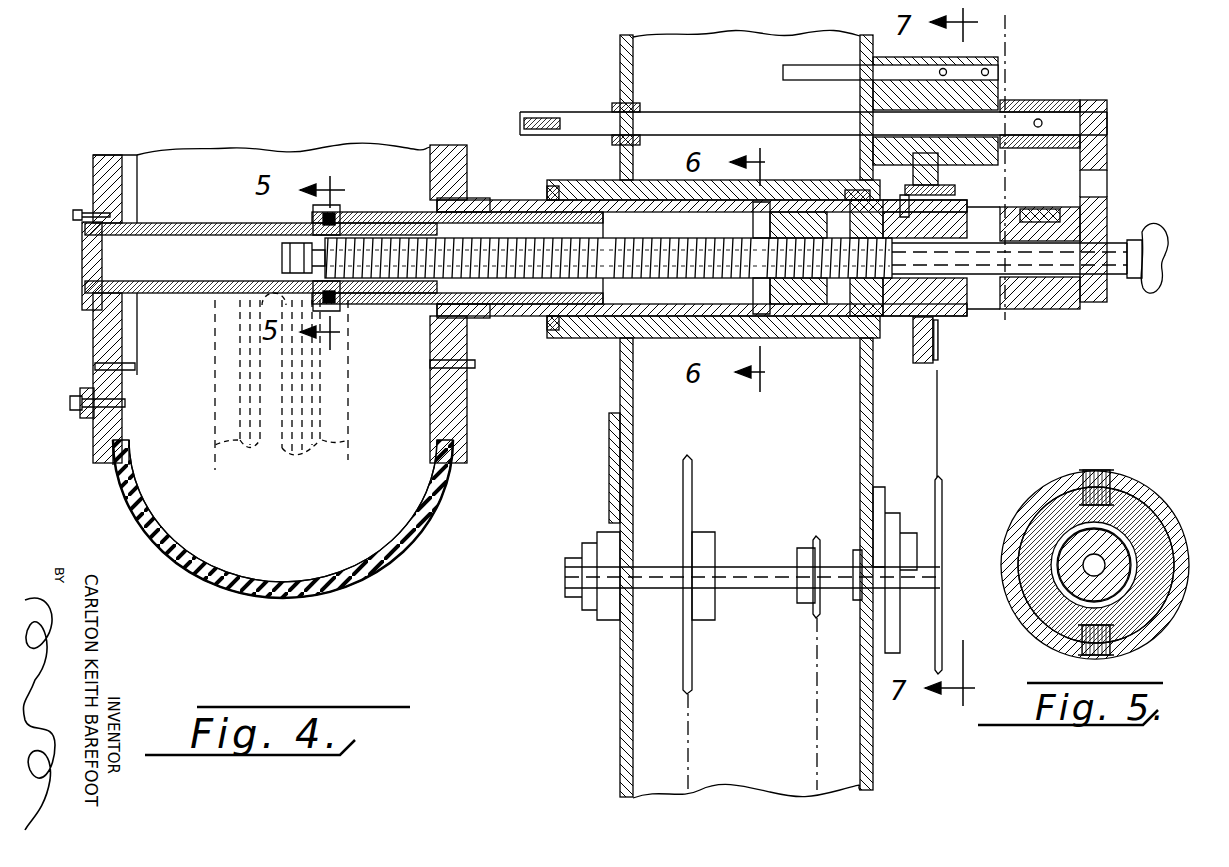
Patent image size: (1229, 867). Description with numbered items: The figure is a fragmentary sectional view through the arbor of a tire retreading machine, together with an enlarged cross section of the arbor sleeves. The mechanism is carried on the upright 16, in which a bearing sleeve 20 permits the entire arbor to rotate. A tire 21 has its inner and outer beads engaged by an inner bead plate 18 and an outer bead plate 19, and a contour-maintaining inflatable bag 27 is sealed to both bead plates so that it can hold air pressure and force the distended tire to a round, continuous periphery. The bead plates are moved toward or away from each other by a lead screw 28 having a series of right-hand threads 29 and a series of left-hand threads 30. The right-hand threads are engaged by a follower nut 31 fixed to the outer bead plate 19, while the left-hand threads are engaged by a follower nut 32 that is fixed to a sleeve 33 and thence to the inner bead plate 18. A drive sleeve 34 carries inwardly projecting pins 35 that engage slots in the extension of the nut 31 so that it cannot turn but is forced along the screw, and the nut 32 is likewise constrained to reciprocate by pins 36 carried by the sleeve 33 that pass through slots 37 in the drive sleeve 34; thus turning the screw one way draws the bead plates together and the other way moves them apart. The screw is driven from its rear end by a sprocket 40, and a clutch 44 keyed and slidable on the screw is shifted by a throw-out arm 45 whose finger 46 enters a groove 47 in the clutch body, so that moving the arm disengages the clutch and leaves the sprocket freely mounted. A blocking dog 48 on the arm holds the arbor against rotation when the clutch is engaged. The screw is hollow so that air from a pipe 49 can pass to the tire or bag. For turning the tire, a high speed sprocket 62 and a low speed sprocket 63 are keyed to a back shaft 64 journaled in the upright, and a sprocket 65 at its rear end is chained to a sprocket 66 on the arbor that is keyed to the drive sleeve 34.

In FIG. 4, the upright 16 is at (620, 58).
In FIG. 4, the inner bead plate 18 is at (480, 390).
In FIG. 4, the outer bead plate 19 is at (95, 346).
In FIG. 4, the bearing sleeve 20 is at (660, 180).
In FIG. 4, the tire 21 is at (403, 547).
In FIG. 4, the inflatable bag 27 is at (197, 547).
In FIG. 4, the lead screw 28 is at (608, 279).
In FIG. 5, the lead screw 28 is at (1127, 598).
In FIG. 4, the right-hand threads 29 is at (507, 283).
In FIG. 4, the left-hand threads 30 is at (820, 306).
In FIG. 4, the follower nut 31 is at (490, 212).
In FIG. 5, the follower nut 31 is at (1033, 603).
In FIG. 4, the follower nut 32 is at (800, 212).
In FIG. 4, the sleeve 33 is at (680, 338).
In FIG. 4, the drive sleeve 34 is at (377, 200).
In FIG. 5, the drive sleeve 34 is at (1057, 484).
In FIG. 4, the pins 35 is at (343, 304).
In FIG. 5, the pins 35 is at (1108, 482).
In FIG. 4, the pins 36 is at (780, 314).
In FIG. 4, the slots 37 is at (650, 338).
In FIG. 4, the sprocket 40 is at (1007, 208).
In FIG. 4, the clutch 44 is at (1050, 317).
In FIG. 4, the throw-out arm 45 is at (578, 110).
In FIG. 4, the finger 46 is at (1108, 207).
In FIG. 4, the groove 47 is at (1093, 302).
In FIG. 4, the blocking dog 48 is at (973, 97).
In FIG. 4, the pipe 49 is at (1200, 227).
In FIG. 4, the high speed sprocket 62 is at (813, 607).
In FIG. 4, the low speed sprocket 63 is at (690, 480).
In FIG. 4, the back shaft 64 is at (747, 567).
In FIG. 4, the sprocket 65 is at (943, 497).
In FIG. 4, the sprocket 66 is at (943, 342).